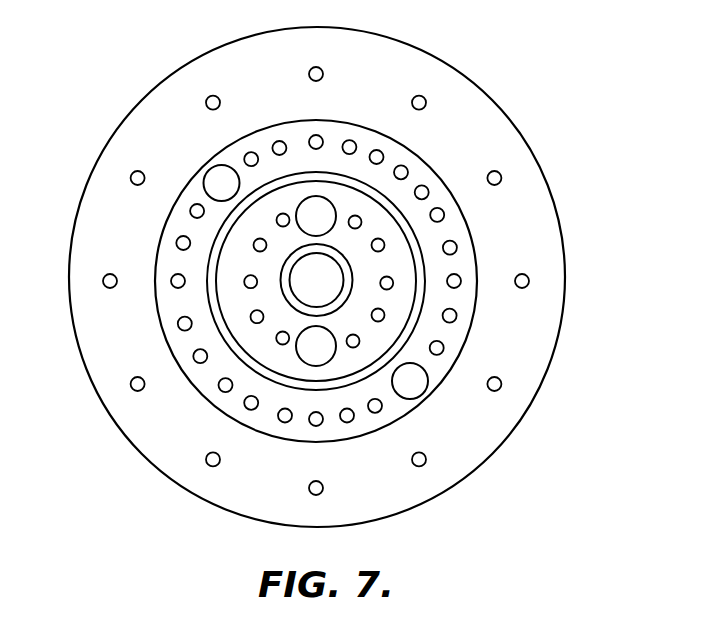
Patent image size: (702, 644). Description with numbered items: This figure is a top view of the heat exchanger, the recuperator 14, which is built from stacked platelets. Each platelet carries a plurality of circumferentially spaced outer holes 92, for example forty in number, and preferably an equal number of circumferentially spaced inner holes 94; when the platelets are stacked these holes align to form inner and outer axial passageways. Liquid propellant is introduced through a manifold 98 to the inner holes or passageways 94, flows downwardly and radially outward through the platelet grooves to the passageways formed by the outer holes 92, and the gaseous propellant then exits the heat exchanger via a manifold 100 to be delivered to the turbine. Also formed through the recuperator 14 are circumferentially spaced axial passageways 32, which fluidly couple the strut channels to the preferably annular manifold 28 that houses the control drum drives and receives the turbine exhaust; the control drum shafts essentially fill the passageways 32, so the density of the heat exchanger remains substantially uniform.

The recuperator 14 is at (535, 157).
The manifold 28 is at (538, 358).
The axial passageways 32 is at (500, 387).
The outer holes 92 is at (246, 408).
The inner holes 94 is at (243, 283).
The manifold 98 is at (393, 270).
The manifold 100 is at (440, 370).